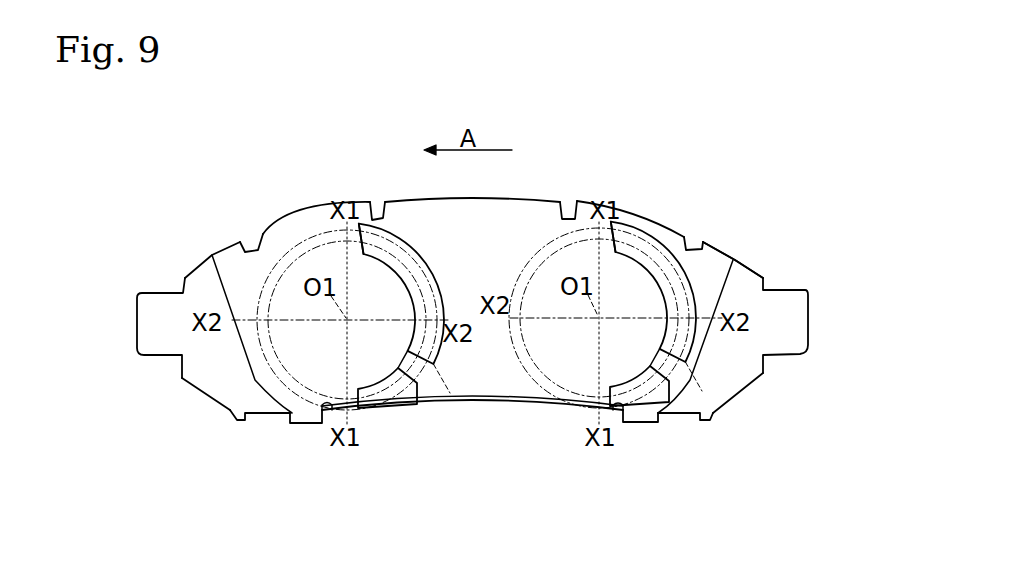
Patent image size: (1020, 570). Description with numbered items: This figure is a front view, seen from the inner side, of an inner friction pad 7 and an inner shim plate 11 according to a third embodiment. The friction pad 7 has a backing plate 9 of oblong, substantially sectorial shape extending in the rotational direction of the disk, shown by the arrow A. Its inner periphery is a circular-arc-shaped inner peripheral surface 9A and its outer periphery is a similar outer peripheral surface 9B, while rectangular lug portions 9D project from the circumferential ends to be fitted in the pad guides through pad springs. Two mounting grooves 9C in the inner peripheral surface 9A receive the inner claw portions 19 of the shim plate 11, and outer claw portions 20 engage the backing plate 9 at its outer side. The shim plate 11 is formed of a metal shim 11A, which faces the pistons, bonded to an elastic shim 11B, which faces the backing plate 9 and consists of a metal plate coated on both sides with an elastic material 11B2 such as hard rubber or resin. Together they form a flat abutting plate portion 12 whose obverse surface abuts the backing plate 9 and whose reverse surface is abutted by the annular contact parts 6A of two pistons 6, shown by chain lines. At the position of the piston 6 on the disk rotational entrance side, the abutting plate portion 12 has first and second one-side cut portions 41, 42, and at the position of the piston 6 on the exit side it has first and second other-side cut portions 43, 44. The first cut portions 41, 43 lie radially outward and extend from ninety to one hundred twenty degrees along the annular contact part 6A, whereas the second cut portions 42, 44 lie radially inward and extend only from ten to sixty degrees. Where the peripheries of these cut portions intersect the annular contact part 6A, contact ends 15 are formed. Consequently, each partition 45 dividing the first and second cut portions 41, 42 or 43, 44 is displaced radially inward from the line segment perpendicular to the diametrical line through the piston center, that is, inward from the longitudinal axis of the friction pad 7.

The piston 6 is at (292, 246).
The annular contact part 6A is at (323, 238).
The friction pad 7 is at (753, 262).
The backing plate 9 is at (201, 378).
The inner peripheral surface 9A is at (488, 404).
The outer peripheral surface 9B is at (254, 243).
The mounting groove 9C is at (260, 418).
The lug portion 9D is at (153, 297).
The shim plate 11 is at (534, 205).
The metal shim 11A is at (529, 404).
The elastic shim 11B is at (668, 371).
The elastic material 11B2 is at (362, 404).
The abutting plate portion 12 is at (503, 218).
The contact end 15 is at (371, 204).
The inner claw portion 19 is at (305, 424).
The outer claw portion 20 is at (214, 257).
The first one-side cut portion 41 is at (681, 234).
The second one-side cut portion 42 is at (645, 400).
The first other-side cut portion 43 is at (408, 243).
The second other-side cut portion 44 is at (388, 398).
The partition 45 is at (414, 362).